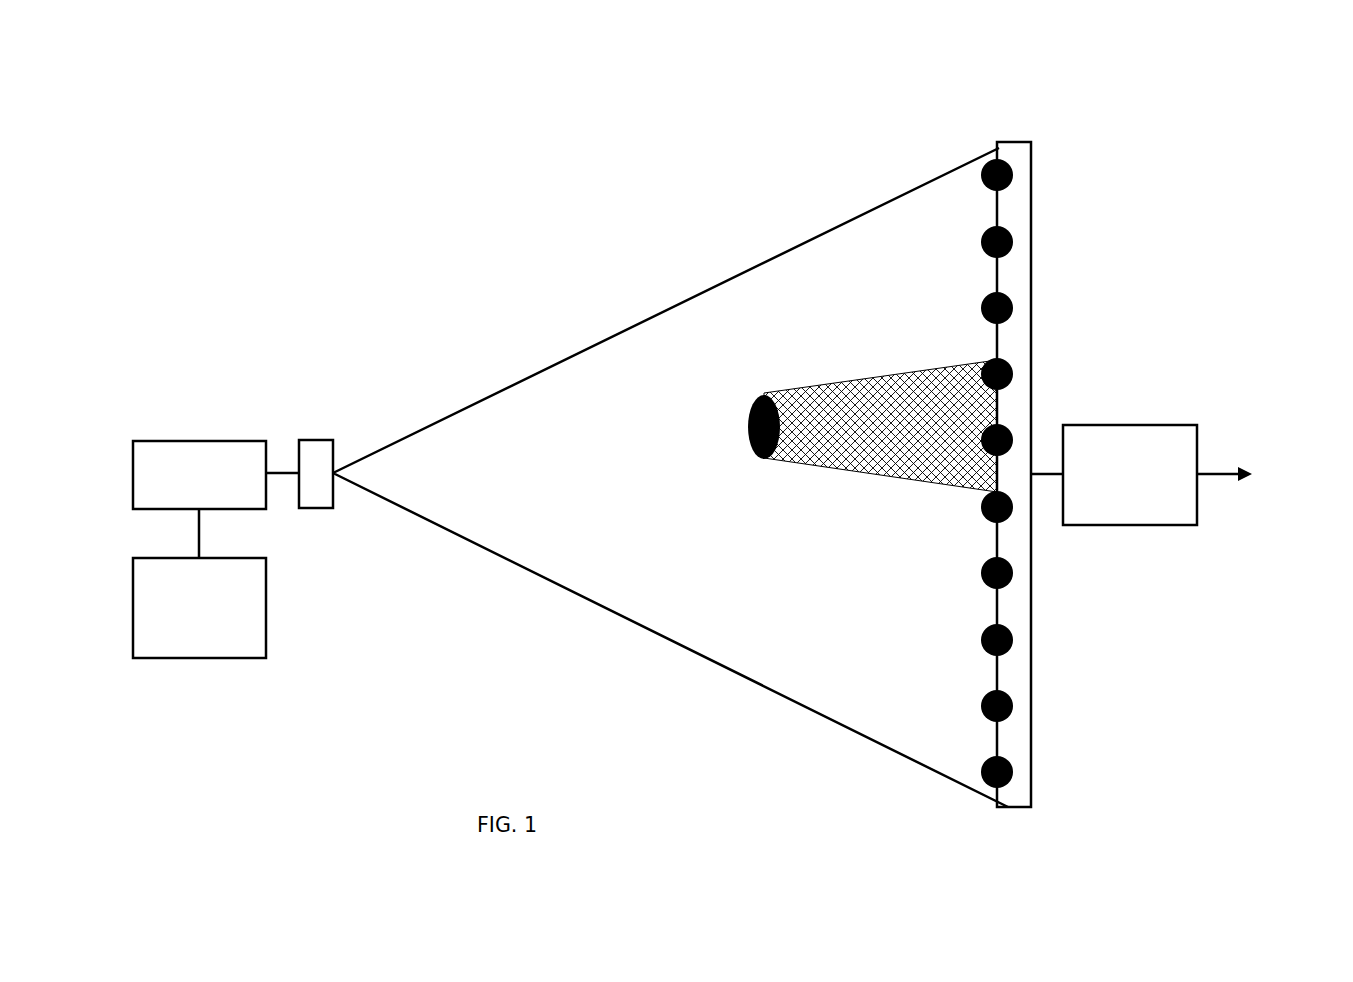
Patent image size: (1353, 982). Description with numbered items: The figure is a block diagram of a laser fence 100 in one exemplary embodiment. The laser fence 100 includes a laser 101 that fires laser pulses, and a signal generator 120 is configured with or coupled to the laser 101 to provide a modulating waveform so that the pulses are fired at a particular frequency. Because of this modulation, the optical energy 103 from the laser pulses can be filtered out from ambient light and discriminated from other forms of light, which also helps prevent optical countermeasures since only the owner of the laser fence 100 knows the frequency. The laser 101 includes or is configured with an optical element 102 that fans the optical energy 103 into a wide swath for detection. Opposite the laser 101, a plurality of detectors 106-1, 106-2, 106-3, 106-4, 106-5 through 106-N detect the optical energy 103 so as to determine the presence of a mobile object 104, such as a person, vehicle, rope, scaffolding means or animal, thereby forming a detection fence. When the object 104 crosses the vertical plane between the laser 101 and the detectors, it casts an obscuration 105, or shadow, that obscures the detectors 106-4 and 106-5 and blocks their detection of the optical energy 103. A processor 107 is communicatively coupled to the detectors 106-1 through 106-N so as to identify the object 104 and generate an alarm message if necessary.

The laser fence 100 is at (325, 253).
The laser 101 is at (248, 487).
The optical element 102 is at (315, 440).
The optical energy 103 is at (608, 407).
The mobile object 104 is at (745, 417).
The obscuration 105 is at (922, 385).
The detector 106-1 is at (1013, 176).
The detector 106-2 is at (1013, 243).
The detector 106-3 is at (1013, 309).
The detector 106-4 is at (1013, 374).
The detector 106-5 is at (1013, 440).
The detector 106-N is at (1013, 772).
The processor 107 is at (1148, 501).
The signal generator 120 is at (217, 646).